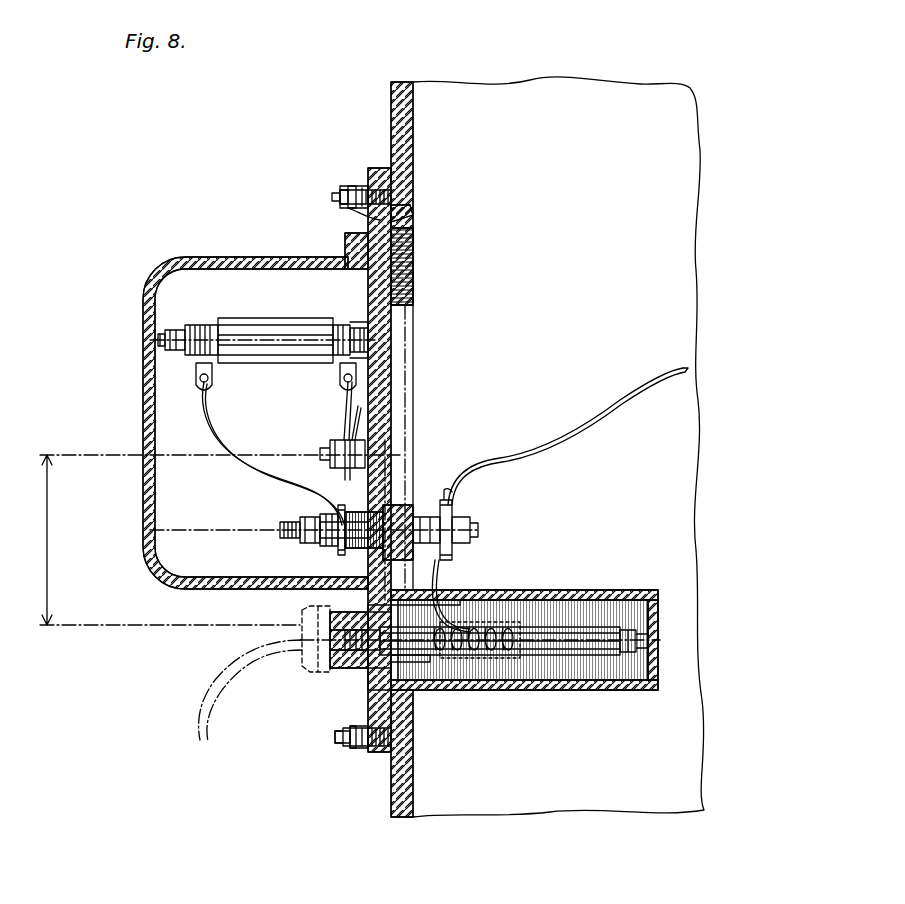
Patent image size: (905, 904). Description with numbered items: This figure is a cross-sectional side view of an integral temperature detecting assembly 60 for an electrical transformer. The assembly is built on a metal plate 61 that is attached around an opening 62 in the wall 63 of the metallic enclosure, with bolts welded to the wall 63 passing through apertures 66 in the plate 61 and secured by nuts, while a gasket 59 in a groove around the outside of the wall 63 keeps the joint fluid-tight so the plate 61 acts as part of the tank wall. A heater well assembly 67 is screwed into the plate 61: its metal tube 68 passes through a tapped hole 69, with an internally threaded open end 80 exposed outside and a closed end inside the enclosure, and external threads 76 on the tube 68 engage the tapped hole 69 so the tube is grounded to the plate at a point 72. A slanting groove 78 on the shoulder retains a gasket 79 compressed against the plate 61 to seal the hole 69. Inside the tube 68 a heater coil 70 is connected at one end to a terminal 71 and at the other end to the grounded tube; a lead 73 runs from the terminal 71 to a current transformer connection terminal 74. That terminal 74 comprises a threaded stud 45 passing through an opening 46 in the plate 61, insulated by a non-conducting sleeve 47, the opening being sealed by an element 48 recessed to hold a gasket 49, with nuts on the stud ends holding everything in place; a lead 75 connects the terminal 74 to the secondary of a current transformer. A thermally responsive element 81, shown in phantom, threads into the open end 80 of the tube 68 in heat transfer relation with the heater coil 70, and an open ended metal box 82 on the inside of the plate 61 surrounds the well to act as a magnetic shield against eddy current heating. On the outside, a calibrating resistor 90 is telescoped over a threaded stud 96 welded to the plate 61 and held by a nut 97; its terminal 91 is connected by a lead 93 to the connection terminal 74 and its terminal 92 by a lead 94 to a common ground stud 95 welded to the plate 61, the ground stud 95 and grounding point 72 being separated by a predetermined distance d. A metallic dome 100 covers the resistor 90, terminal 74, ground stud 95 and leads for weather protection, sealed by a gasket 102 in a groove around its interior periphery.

The threaded stud 45 is at (280, 530).
The opening 46 is at (330, 546).
The non-conducting sleeve 47 is at (340, 505).
The sealing element 48 is at (465, 572).
The gasket 49 is at (413, 505).
The gasket 59 is at (348, 208).
The temperature detecting assembly 60 is at (335, 168).
The metal plate 61 is at (380, 168).
The opening 62 is at (413, 236).
The wall 63 is at (413, 200).
The aperture 66 is at (410, 208).
The heater well assembly 67 is at (580, 680).
The metal tube 68 is at (545, 655).
The tapped hole 69 is at (345, 612).
The heater coil 70 is at (497, 655).
The terminal 71 is at (652, 600).
The grounding point 72 is at (391, 612).
The lead 73 is at (440, 595).
The current transformer connection terminal 74 is at (444, 500).
The lead 75 is at (620, 400).
The external threads 76 is at (391, 662).
The slanting groove 78 is at (368, 675).
The gasket 79 is at (368, 606).
The internally threaded open end 80 is at (302, 632).
The thermally responsive element 81 is at (460, 658).
The metal box 82 is at (570, 590).
The calibrating resistor 90 is at (278, 318).
The terminal 91 is at (212, 378).
The terminal 92 is at (340, 382).
The lead 93 is at (218, 433).
The lead 94 is at (346, 415).
The common ground stud 95 is at (320, 452).
The threaded stud 96 is at (158, 340).
The nut 97 is at (175, 330).
The metallic dome 100 is at (205, 257).
The gasket 102 is at (345, 240).